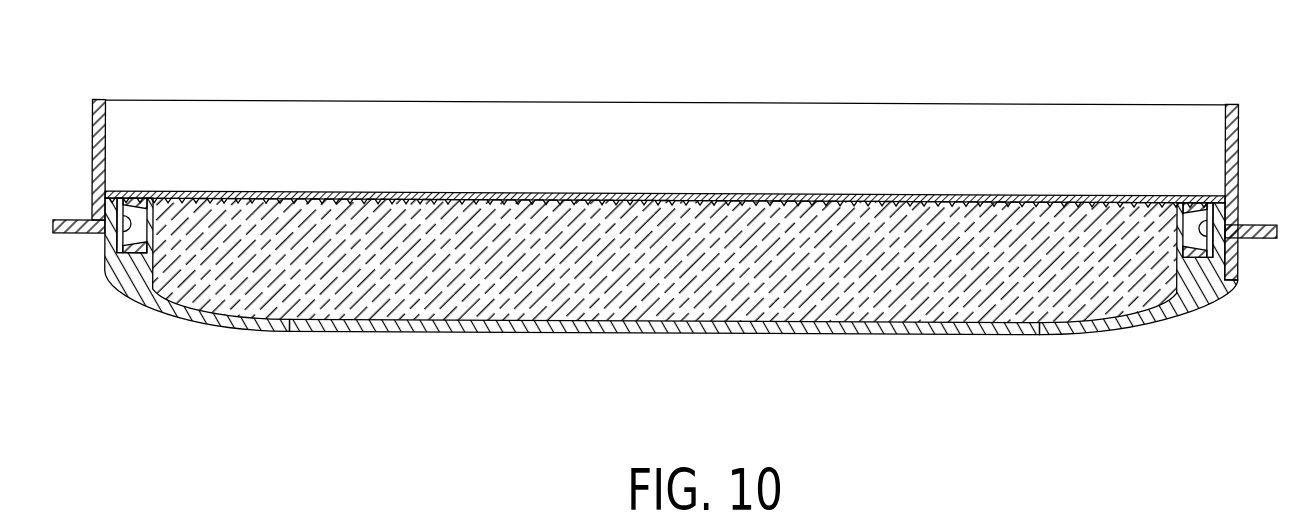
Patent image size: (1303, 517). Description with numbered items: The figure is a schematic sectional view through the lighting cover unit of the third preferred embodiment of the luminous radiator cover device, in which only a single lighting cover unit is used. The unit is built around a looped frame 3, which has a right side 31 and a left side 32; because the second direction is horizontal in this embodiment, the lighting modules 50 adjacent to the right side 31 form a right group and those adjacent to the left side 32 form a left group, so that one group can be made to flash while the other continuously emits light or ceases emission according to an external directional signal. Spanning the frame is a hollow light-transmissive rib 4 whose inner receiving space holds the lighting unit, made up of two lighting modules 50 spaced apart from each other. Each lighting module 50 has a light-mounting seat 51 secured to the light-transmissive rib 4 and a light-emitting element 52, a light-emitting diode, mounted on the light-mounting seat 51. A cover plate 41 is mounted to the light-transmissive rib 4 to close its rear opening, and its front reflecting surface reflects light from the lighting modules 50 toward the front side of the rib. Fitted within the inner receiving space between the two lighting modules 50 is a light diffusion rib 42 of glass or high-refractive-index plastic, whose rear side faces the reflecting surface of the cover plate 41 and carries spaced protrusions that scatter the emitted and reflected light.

The looped frame 3 is at (376, 102).
The right side 31 is at (1238, 131).
The left side 32 is at (92, 137).
The light-transmissive rib 4 is at (587, 334).
The cover plate 41 is at (583, 196).
The light diffusion rib 42 is at (846, 302).
The lighting module 50 is at (135, 262).
The light-mounting seat 51 is at (1213, 230).
The light-emitting element 52 is at (1197, 206).